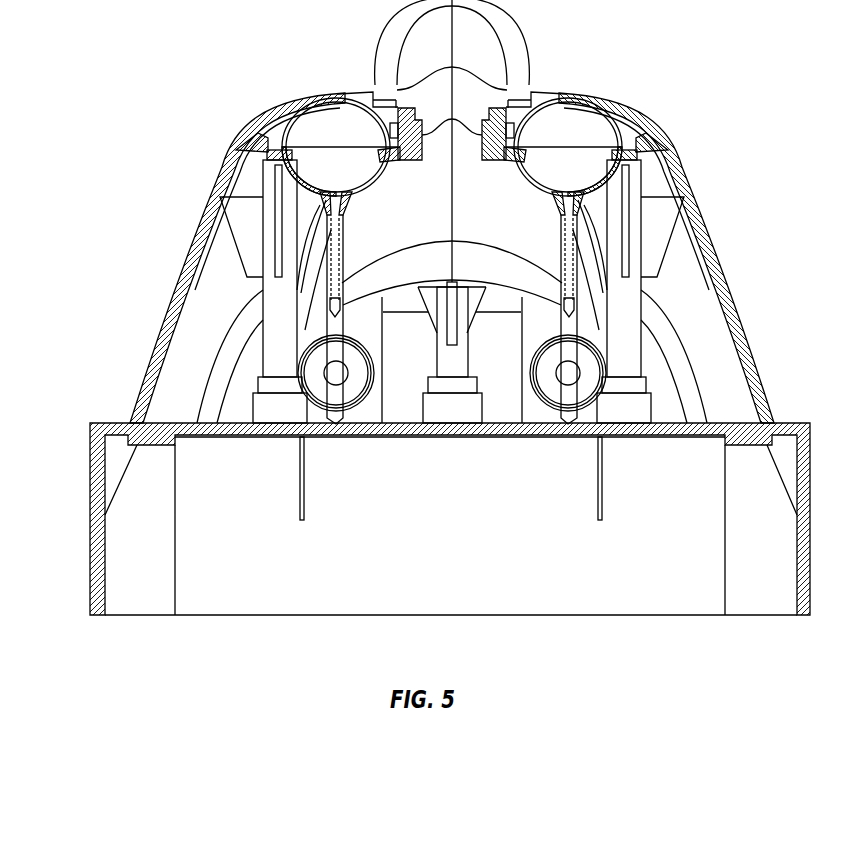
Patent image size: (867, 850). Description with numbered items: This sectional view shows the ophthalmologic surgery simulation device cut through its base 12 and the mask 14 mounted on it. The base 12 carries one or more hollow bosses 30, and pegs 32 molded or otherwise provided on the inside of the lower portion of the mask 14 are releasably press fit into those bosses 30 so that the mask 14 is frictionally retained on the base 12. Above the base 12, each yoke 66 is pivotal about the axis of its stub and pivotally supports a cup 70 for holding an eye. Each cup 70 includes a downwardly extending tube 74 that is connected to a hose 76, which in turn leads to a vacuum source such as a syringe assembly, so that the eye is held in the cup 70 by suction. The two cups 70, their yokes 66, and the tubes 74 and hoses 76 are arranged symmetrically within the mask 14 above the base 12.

The base 12 is at (90, 468).
The mask 14 is at (170, 290).
The hollow boss 30 is at (280, 413).
The peg 32 is at (272, 322).
The yoke 66 is at (392, 160).
The cup 70 is at (370, 183).
The tube 74 is at (345, 253).
The hose 76 is at (345, 283).